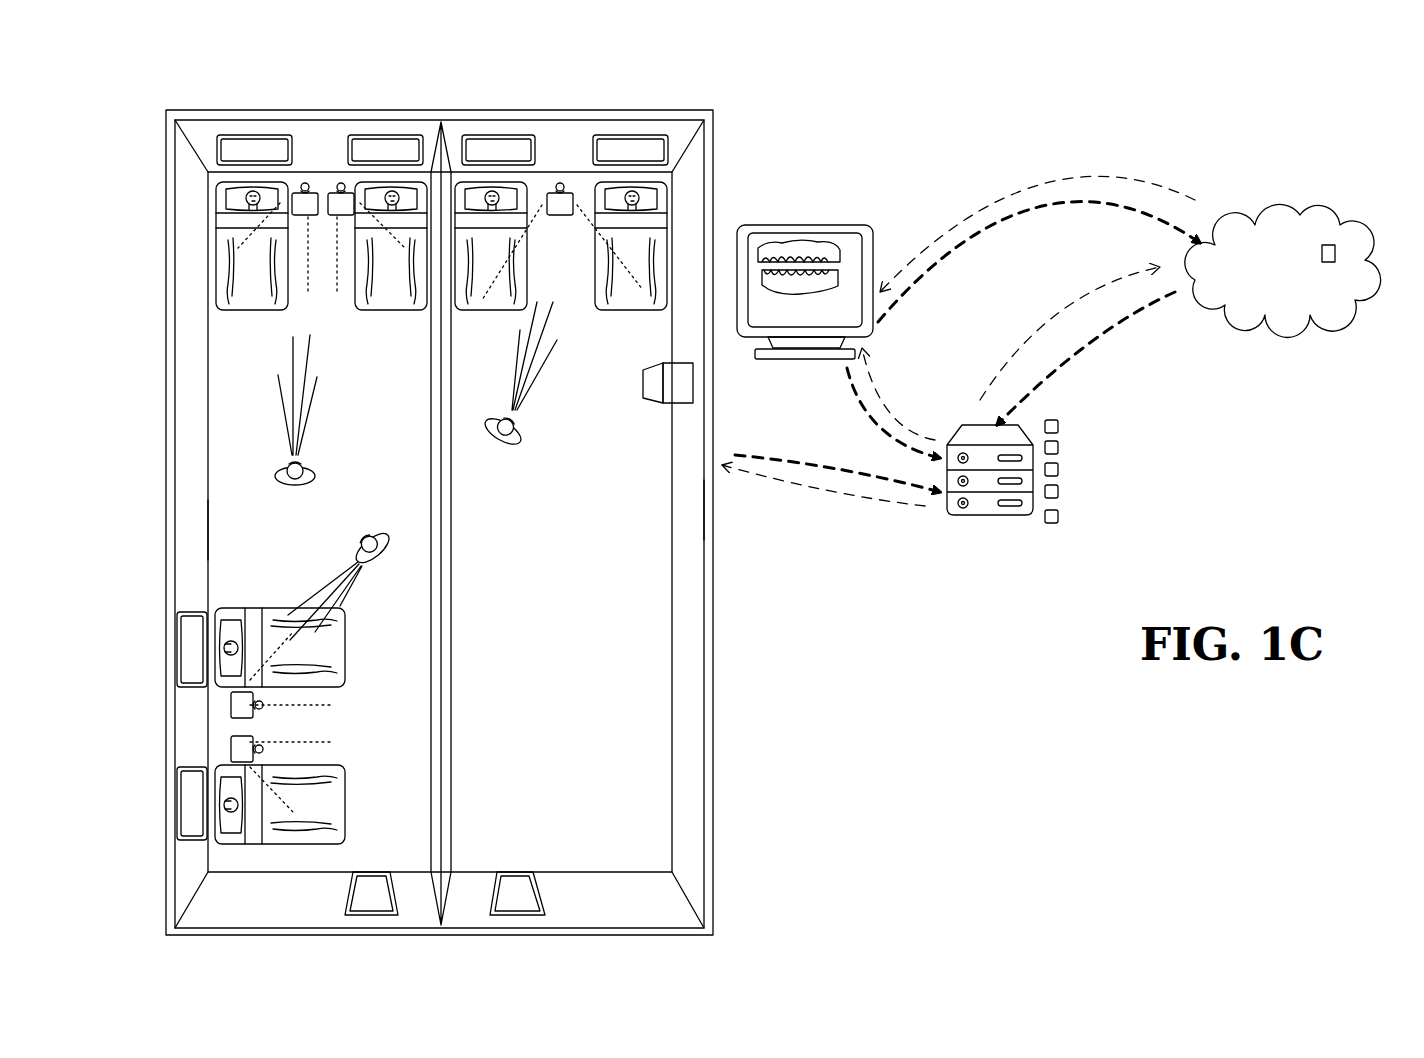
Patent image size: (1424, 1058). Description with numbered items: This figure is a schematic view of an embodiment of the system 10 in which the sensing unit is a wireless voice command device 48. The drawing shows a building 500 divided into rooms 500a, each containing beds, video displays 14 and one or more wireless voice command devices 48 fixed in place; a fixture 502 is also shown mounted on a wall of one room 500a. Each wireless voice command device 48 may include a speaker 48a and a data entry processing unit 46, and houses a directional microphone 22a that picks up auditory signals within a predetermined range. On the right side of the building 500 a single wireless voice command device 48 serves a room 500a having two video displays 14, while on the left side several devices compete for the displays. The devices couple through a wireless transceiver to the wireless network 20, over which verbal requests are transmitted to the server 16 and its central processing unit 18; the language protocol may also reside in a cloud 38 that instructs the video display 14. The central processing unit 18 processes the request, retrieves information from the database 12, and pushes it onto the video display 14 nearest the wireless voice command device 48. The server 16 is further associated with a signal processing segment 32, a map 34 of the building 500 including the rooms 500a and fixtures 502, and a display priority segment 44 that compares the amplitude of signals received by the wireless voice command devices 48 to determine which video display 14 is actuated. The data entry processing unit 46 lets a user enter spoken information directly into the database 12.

The building 500 is at (594, 72).
The room 500a is at (208, 525).
The system 10 is at (972, 110).
The video display 14 is at (270, 135).
The data entry processing unit 46 is at (340, 193).
The wireless voice command device 48 is at (388, 423).
The speaker 48a is at (388, 423).
The microphone 22a is at (350, 215).
The fixture 502 is at (690, 388).
The wireless network 20 is at (1023, 205).
The cloud 38 is at (1240, 205).
The server 16 is at (1335, 253).
The database 12 is at (1058, 427).
The central processing unit 18 is at (1058, 448).
The signal processing segment 32 is at (1058, 470).
The map 34 is at (1058, 492).
The display priority segment 44 is at (1058, 517).